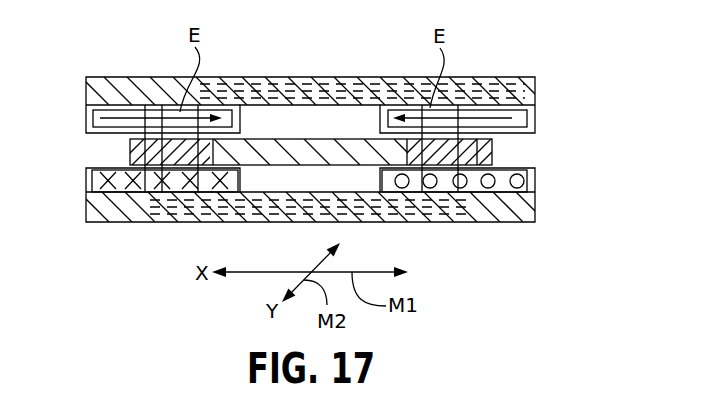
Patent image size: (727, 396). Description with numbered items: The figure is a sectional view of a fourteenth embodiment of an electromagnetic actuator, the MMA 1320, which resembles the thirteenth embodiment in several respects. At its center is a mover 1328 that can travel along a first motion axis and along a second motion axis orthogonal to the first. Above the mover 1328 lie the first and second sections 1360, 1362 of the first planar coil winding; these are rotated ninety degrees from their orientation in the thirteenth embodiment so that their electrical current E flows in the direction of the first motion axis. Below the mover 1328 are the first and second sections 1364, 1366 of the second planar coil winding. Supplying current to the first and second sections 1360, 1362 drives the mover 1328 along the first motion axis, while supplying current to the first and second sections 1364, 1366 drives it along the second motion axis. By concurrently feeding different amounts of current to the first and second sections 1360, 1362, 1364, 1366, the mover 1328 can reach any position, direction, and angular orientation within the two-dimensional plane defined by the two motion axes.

The MMA 1320 is at (146, 50).
The mover 1328 is at (333, 126).
The first section of the first planar coil winding 1360 is at (118, 98).
The second section of the first planar coil winding 1362 is at (495, 100).
The first section of the second planar coil winding 1364 is at (119, 191).
The second section of the second planar coil winding 1366 is at (503, 193).